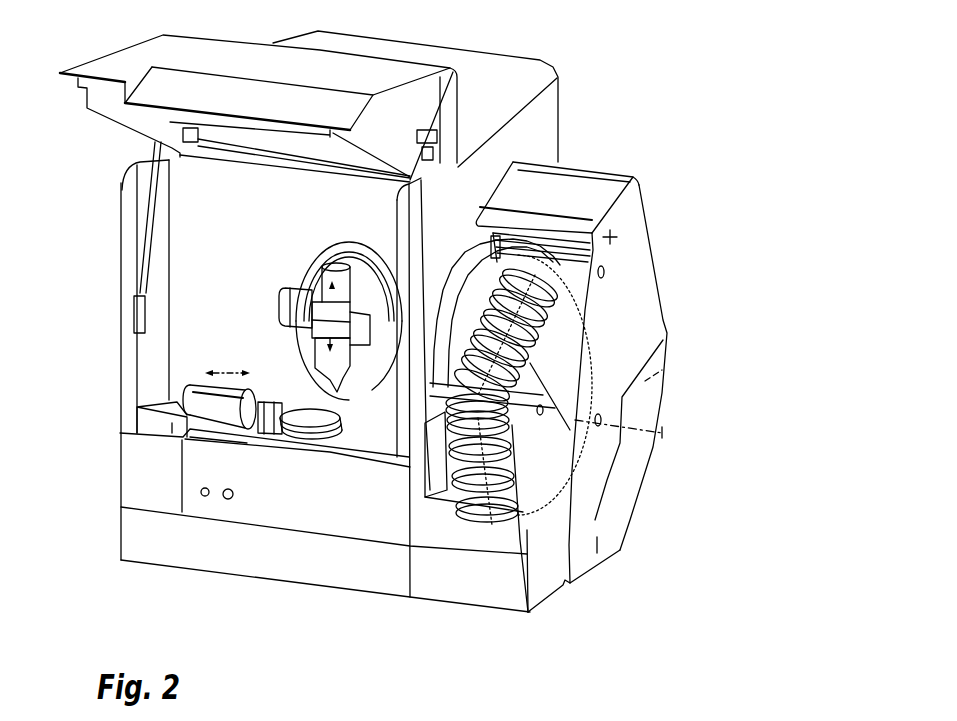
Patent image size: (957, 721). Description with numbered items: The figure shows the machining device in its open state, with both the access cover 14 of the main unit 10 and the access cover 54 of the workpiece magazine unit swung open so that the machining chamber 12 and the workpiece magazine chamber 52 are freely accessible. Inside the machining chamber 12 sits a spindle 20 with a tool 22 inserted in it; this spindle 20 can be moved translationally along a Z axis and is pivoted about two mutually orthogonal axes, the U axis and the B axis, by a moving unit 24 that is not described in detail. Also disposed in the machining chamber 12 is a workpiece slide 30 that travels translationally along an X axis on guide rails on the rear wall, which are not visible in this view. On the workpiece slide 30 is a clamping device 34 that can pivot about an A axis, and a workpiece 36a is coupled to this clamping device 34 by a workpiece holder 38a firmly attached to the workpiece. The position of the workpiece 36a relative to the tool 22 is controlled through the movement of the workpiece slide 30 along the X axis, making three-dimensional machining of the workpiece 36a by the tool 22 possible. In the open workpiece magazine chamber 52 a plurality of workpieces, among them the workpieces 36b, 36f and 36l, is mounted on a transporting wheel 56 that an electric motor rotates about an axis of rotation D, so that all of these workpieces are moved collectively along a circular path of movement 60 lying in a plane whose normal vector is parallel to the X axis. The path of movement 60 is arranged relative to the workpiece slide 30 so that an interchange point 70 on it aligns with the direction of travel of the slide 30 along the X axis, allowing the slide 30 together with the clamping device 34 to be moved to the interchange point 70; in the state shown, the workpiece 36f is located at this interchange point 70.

The main unit 10 is at (91, 54).
The machining chamber 12 is at (189, 212).
The access cover 14 is at (180, 50).
The spindle 20 is at (362, 375).
The tool 22 is at (350, 382).
The moving unit 24 is at (388, 242).
The workpiece slide 30 is at (280, 433).
The clamping device 34 is at (220, 452).
The workpiece 36a is at (310, 420).
The workpiece 36b is at (528, 612).
The workpiece 36f is at (462, 405).
The workpiece 36l is at (560, 267).
The workpiece holder 38a is at (328, 428).
The workpiece magazine chamber 52 is at (514, 238).
The access cover 54 is at (603, 180).
The transporting wheel 56 is at (552, 320).
The path of movement 60 is at (590, 363).
The interchange point 70 is at (520, 447).
The A axis A is at (313, 420).
The B axis B is at (340, 282).
The axis of rotation D is at (637, 430).
The U axis U is at (340, 312).
The X axis X is at (305, 345).
The Z axis Z is at (323, 285).